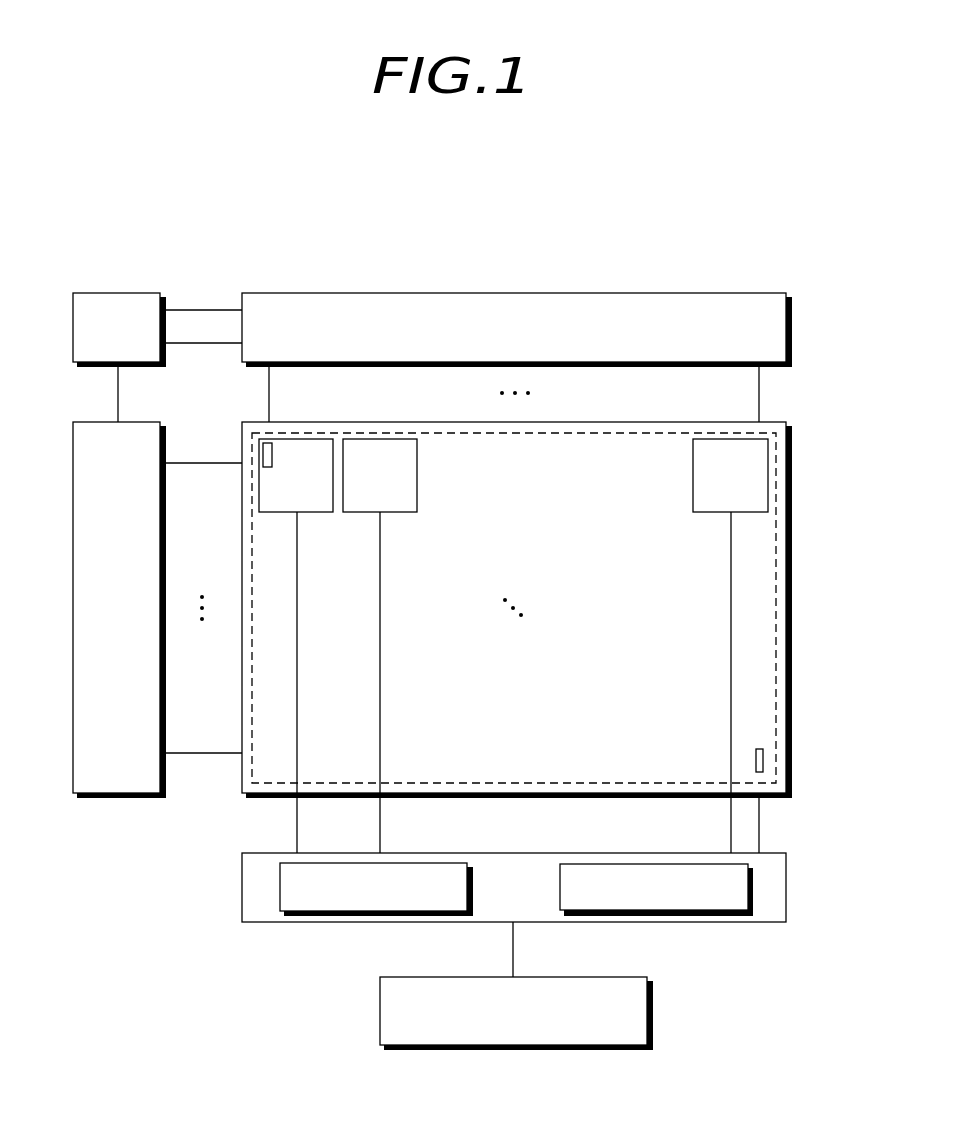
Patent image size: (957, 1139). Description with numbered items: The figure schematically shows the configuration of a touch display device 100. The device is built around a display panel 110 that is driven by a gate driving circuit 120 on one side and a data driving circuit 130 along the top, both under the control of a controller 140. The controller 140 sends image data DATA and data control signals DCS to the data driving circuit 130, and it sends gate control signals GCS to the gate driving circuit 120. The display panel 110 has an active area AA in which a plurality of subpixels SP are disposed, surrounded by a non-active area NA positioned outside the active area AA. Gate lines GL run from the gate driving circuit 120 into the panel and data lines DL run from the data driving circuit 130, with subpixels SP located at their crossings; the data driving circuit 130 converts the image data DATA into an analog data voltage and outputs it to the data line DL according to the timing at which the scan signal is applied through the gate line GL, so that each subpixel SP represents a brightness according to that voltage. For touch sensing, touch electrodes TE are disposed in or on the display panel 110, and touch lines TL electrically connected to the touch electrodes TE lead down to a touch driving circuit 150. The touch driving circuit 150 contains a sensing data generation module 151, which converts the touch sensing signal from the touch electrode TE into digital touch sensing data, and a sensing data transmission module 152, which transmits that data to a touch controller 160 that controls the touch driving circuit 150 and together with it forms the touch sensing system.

The touch display device 100 is at (114, 249).
The display panel 110 is at (792, 628).
The gate driving circuit 120 is at (133, 617).
The data driving circuit 130 is at (525, 338).
The controller 140 is at (133, 338).
The touch driving circuit 150 is at (786, 885).
The sensing data generation module 151 is at (389, 899).
The sensing data transmission module 152 is at (668, 899).
The touch controller 160 is at (530, 1024).
The image data DATA is at (201, 296).
The data control signals DCS is at (201, 356).
The gate control signals GCS is at (91, 394).
The gate line GL is at (202, 754).
The data line DL is at (759, 393).
The touch electrode TE is at (768, 473).
The touch line TL is at (759, 825).
The subpixel SP is at (763, 760).
The active area AA is at (742, 533).
The non-active area NA is at (783, 557).